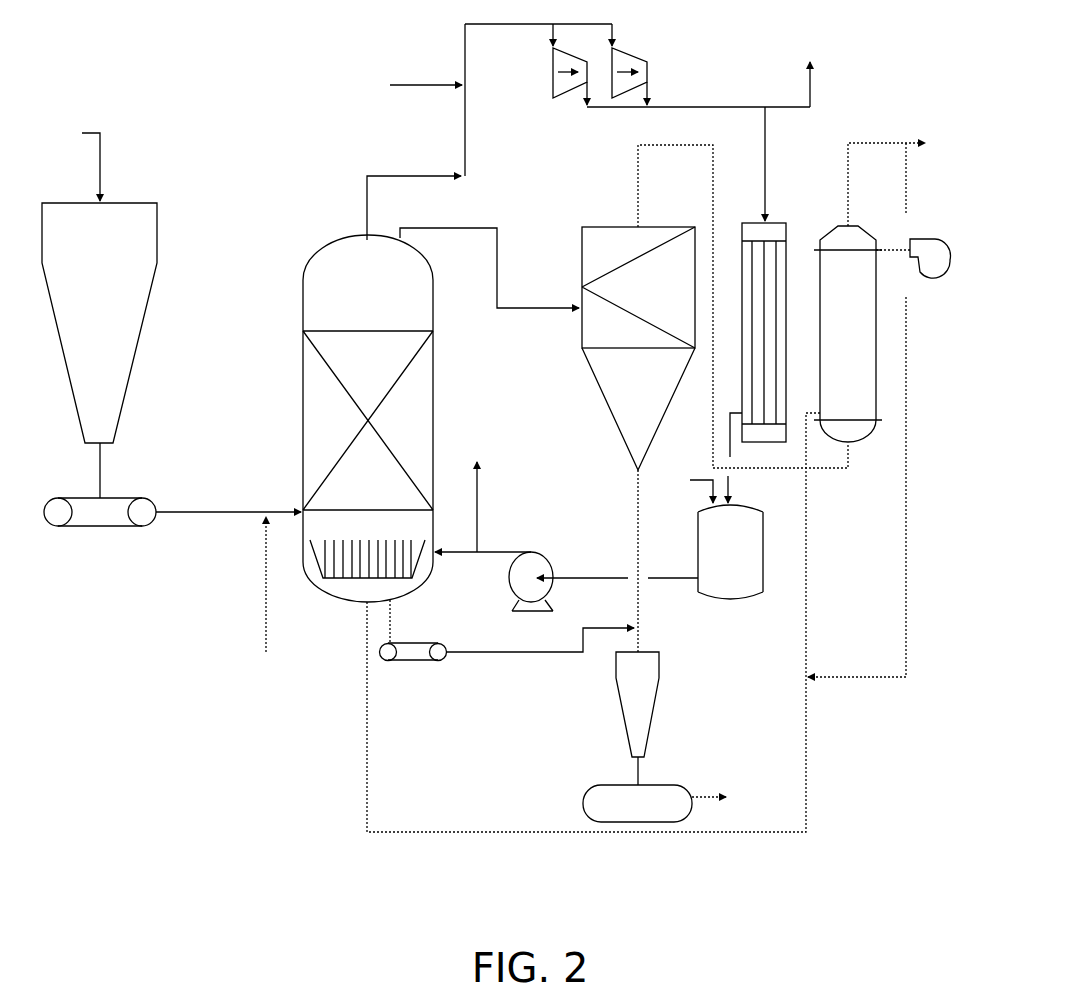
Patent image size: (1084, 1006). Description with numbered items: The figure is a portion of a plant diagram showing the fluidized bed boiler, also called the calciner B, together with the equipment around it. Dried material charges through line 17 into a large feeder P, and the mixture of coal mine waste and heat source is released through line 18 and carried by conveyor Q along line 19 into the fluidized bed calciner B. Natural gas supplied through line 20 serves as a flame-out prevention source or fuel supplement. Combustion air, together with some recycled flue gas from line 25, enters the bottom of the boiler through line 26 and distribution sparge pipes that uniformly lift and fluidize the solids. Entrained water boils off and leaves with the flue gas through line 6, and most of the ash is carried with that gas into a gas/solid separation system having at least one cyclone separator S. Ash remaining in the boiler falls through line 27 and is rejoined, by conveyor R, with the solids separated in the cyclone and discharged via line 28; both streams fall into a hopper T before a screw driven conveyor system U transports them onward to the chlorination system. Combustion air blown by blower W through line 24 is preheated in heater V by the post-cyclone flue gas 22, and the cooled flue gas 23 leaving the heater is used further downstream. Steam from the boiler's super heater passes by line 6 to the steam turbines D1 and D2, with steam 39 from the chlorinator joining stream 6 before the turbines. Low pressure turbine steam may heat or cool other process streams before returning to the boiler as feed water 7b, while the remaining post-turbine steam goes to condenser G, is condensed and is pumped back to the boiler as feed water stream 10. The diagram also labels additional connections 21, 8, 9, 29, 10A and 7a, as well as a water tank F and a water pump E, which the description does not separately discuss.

The line 17 is at (81, 165).
The line 18 is at (108, 470).
The line 19 is at (228, 503).
The line 20 is at (259, 596).
The line 6 is at (404, 132).
The steam 39 is at (403, 78).
The calciner to cyclone separator line 21 is at (489, 268).
The flue gas 22 is at (743, 306).
The turbine outlet line 8 is at (698, 99).
The feed water 7b is at (746, 271).
The condenser inlet line 9 is at (770, 164).
The cooled flue gas 23 is at (901, 175).
The line 24 is at (893, 240).
The line 25 is at (866, 487).
The line 26 is at (584, 622).
The line 27 is at (540, 649).
The line 28 is at (629, 561).
The conveyor outlet line to Fig. 3 29 is at (727, 794).
The feed water stream 10 is at (617, 570).
The water line branch 10A is at (488, 507).
The condensate line to water tank 7a is at (737, 489).
The feeder P is at (99, 323).
The conveyor Q is at (100, 530).
The fluidized bed calciner B is at (368, 418).
The steam turbine D1 is at (538, 77).
The steam turbine D2 is at (629, 77).
The condenser G is at (778, 332).
The cyclone separator S is at (638, 348).
The heater V is at (852, 355).
The blower W is at (933, 270).
The water tank F is at (730, 552).
The water pump E is at (498, 592).
The conveyor R is at (413, 640).
The hopper T is at (637, 718).
The screw driven conveyor system U is at (637, 803).